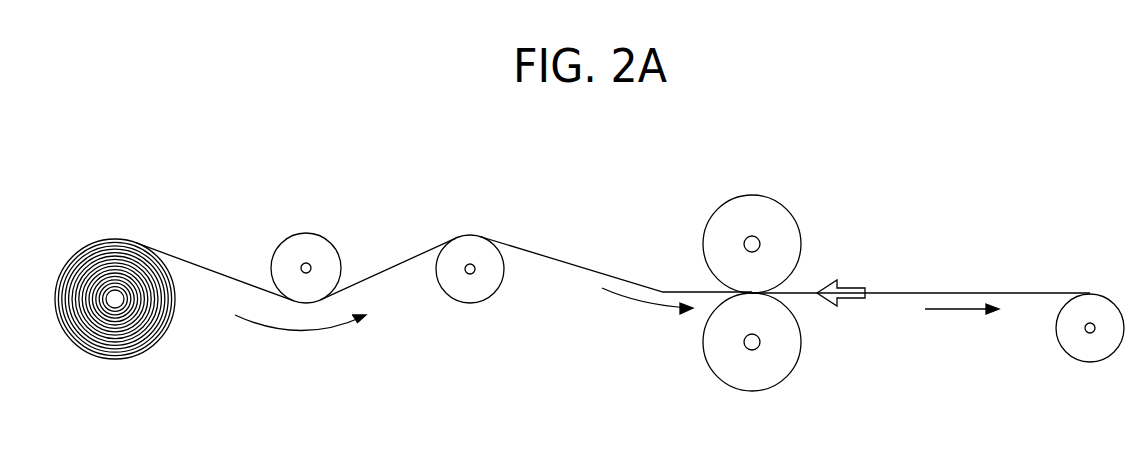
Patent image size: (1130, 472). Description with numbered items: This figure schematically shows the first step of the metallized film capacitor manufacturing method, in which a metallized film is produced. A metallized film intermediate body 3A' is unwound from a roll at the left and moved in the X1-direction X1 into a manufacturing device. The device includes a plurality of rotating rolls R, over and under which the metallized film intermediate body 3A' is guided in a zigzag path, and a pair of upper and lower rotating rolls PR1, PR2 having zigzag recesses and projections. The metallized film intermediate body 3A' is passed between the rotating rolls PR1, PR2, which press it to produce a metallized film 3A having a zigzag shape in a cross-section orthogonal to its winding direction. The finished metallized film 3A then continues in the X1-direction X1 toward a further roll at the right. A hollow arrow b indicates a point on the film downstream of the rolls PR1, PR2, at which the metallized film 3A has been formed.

The metallized film intermediate body 3A' is at (403, 315).
The metallized film 3A is at (938, 287).
The rotating rolls R is at (305, 242).
The upper rotating roll PR1 is at (750, 207).
The lower rotating roll PR2 is at (752, 373).
The X1-direction X1 is at (617, 330).
The pressing point b is at (841, 284).